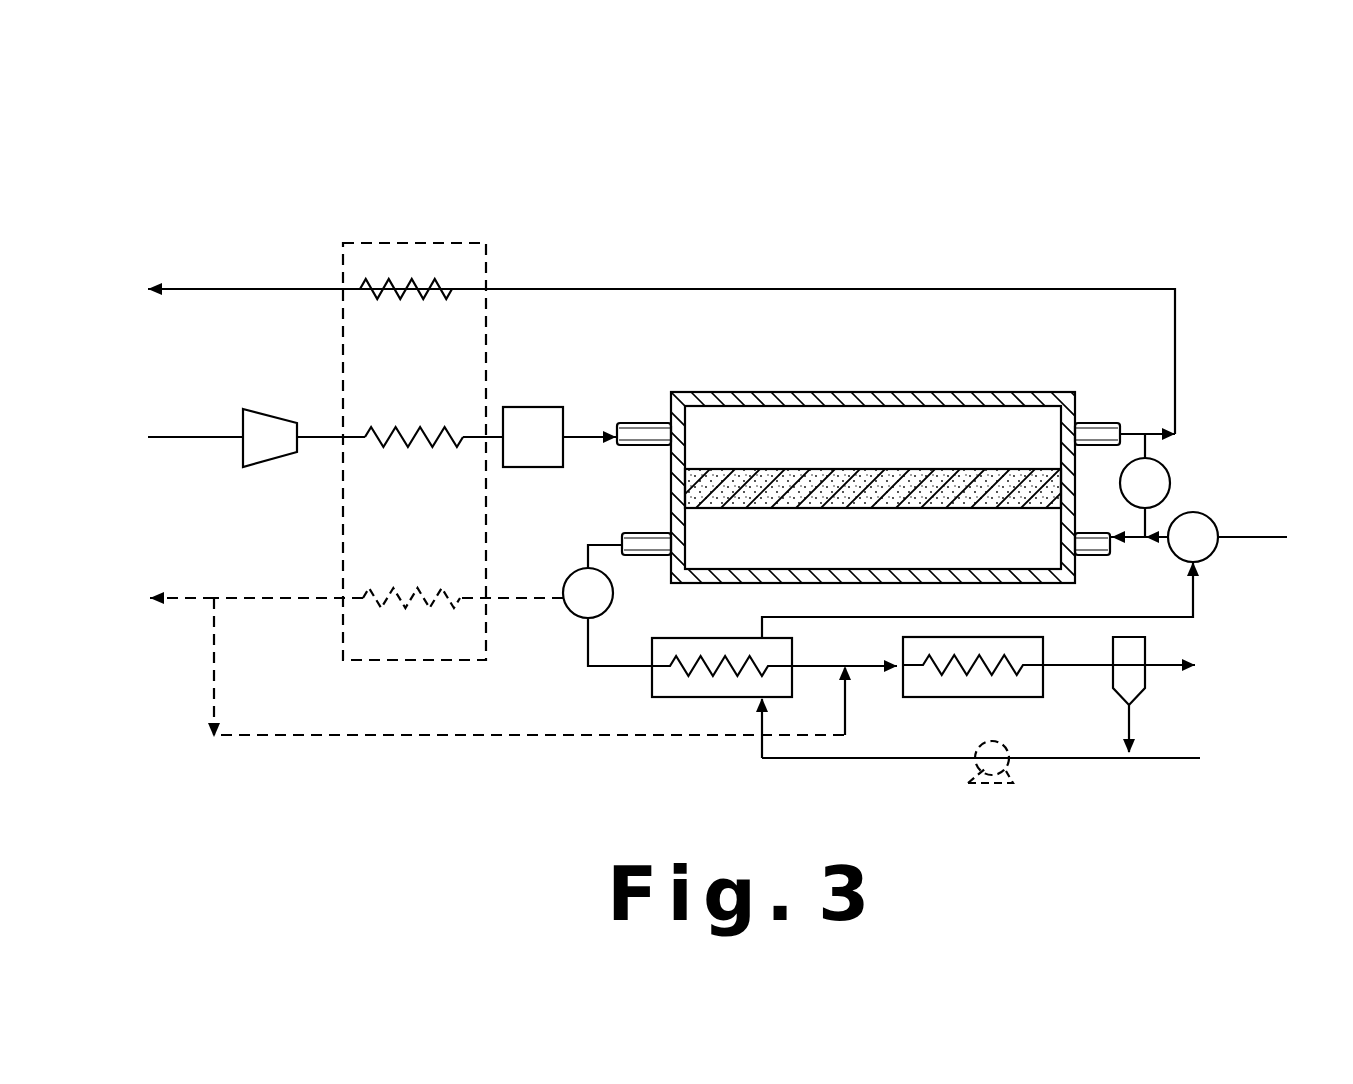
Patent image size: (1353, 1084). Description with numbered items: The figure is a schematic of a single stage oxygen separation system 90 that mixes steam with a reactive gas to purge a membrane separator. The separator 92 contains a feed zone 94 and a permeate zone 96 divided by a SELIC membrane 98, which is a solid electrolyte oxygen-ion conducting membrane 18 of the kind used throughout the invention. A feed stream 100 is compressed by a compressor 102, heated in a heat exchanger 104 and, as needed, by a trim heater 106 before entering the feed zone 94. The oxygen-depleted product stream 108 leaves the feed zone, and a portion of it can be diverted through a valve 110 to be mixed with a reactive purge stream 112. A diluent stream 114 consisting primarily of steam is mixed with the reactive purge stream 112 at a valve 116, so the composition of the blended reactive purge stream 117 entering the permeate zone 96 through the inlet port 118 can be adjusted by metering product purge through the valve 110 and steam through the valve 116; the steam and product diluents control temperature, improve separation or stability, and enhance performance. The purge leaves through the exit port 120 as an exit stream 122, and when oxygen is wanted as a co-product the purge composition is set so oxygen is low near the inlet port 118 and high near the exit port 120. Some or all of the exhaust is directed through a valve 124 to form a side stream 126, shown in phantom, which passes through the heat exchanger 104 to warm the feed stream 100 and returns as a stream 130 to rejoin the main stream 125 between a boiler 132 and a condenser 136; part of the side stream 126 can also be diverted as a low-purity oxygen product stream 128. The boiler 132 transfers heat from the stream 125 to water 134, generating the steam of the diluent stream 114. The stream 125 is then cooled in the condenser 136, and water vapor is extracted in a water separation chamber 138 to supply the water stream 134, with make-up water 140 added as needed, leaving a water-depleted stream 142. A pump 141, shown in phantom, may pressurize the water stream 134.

The oxygen separation system 90 is at (875, 217).
The separator 92 is at (987, 375).
The feed zone 94 is at (756, 420).
The permeate zone 96 is at (710, 558).
The SELIC membrane 98 is at (672, 498).
The solid electrolyte oxygen-ion conducting membrane 18 is at (940, 487).
The feed stream 100 is at (192, 437).
The compressor 102 is at (270, 422).
The heat exchanger 104 is at (458, 243).
The trim heater 106 is at (535, 407).
The oxygen-depleted product stream 108 is at (1175, 315).
The valve 110 is at (1165, 465).
The reactive purge stream 112 is at (1242, 540).
The diluent stream 114 is at (1197, 592).
The valve 116 is at (1218, 518).
The blended reactive purge stream 117 is at (1128, 543).
The inlet port 118 is at (1087, 550).
The exit port 120 is at (648, 555).
The exit stream 122 is at (588, 548).
The valve 124 is at (565, 587).
The stream 125 is at (587, 648).
The side stream 126 is at (508, 600).
The low-purity oxygen product stream 128 is at (190, 598).
The stream 130 is at (363, 735).
The boiler 132 is at (652, 677).
The water 134 is at (762, 745).
The condenser 136 is at (980, 697).
The water separation chamber 138 is at (1145, 645).
The make-up water 140 is at (1167, 758).
The pump 141 is at (972, 782).
The water-depleted stream 142 is at (1163, 667).